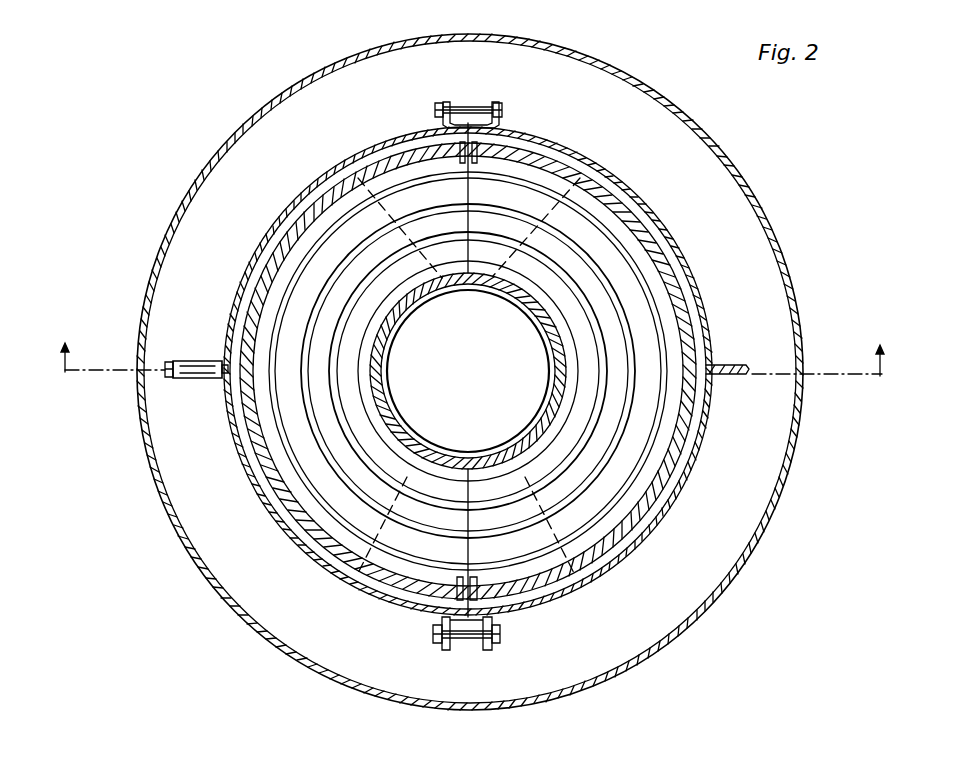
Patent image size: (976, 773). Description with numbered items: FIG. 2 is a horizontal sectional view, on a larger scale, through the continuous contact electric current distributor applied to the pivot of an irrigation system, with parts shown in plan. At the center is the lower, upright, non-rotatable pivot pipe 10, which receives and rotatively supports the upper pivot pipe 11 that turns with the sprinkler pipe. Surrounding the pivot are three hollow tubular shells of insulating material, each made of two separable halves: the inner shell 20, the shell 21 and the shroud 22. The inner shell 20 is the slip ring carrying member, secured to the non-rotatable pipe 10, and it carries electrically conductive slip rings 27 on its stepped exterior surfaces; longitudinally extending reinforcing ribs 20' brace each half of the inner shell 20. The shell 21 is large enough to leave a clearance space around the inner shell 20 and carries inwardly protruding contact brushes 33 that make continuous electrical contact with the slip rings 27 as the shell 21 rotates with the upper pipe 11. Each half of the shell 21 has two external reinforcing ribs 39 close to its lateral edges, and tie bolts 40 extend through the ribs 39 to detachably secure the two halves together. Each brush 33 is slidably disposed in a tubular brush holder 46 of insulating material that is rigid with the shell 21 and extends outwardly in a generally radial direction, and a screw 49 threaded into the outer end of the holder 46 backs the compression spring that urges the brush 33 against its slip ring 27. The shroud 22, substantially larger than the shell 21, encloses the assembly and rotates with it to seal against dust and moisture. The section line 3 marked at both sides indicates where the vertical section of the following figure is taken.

The section line 3- 3 is at (464, 345).
The lower pivot pipe 10 is at (374, 415).
The upper pivot pipe 11 is at (389, 359).
The inner shell 20 is at (468, 371).
The reinforcing ribs 20' is at (468, 376).
The shell 21 is at (318, 181).
The shroud 22 is at (176, 212).
The slip rings 27 is at (328, 462).
The contact brushes 33 is at (225, 391).
The external reinforcing ribs 39 is at (492, 101).
The tie bolts 40 is at (503, 109).
The tubular brush holder 46 is at (195, 361).
The screw 49 is at (170, 379).